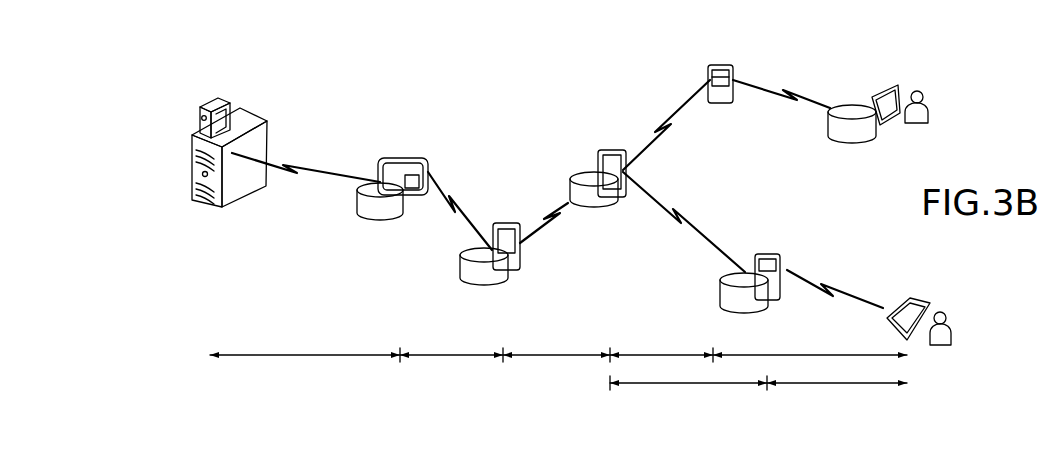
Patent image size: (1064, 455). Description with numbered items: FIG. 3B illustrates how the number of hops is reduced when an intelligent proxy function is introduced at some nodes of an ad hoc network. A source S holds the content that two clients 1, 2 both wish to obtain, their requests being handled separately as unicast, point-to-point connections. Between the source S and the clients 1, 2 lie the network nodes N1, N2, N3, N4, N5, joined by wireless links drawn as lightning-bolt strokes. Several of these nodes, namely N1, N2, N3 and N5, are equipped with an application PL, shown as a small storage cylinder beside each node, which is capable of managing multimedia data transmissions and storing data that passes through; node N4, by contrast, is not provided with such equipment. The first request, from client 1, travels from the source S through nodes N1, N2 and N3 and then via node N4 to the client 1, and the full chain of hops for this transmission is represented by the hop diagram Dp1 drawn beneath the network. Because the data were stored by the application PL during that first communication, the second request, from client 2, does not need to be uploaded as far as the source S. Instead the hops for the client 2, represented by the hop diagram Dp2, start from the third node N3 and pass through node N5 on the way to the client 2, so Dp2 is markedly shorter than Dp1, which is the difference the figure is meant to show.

The source S is at (235, 190).
The node N1 is at (404, 158).
The node N2 is at (510, 223).
The third node N3 is at (612, 150).
The node N4 is at (730, 65).
The node N5 is at (768, 254).
The application PL is at (378, 221).
The client 1 is at (928, 102).
The client 2 is at (952, 321).
The diagram of hops Dp1 is at (538, 359).
The diagram of hops Dp2 is at (538, 387).